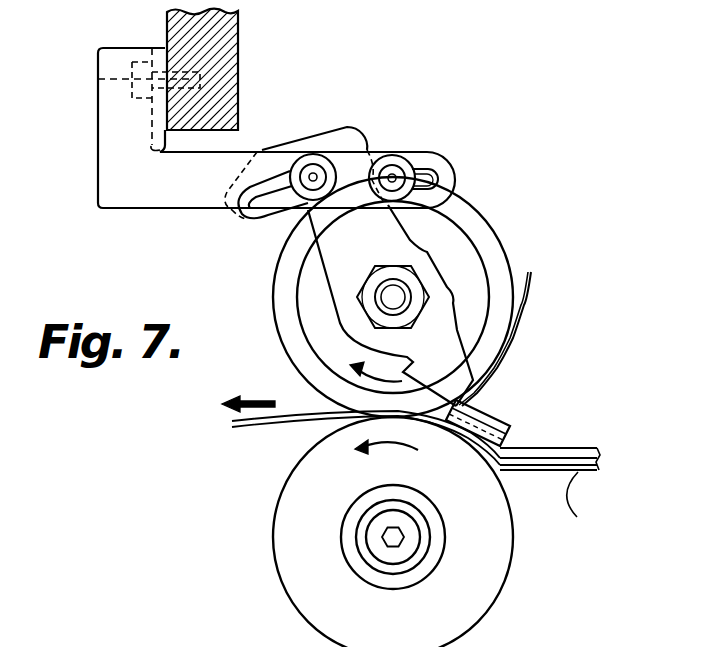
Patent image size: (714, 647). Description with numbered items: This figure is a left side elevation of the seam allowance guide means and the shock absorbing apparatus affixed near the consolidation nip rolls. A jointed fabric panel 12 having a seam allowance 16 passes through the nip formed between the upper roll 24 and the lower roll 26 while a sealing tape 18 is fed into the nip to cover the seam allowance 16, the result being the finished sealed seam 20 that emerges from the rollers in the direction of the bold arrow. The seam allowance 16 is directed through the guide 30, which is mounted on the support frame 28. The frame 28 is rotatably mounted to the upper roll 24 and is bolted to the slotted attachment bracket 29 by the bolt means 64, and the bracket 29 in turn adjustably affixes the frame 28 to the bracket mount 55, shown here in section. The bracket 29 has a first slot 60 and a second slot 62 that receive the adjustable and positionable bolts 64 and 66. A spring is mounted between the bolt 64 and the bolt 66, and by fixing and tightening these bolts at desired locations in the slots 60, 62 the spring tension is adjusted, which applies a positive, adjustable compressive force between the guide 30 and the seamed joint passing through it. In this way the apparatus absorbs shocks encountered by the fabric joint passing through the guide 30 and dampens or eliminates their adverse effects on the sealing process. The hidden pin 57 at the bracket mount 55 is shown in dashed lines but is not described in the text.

The fabric panel 12 is at (595, 511).
The seam allowance 16 is at (557, 453).
The sealing tape 18 is at (557, 278).
The sealed seam 20 is at (302, 423).
The upper roll 24 is at (472, 226).
The lower roll 26 is at (303, 530).
The support frame 28 is at (360, 240).
The slotted attachment bracket 29 is at (153, 182).
The seam allowance guide means 30 is at (482, 405).
The bracket mount 55 is at (240, 62).
The pin 57 is at (98, 79).
The slot 60 is at (262, 178).
The slot 62 is at (423, 163).
The bolt means 64 is at (345, 158).
The bolt 66 is at (391, 170).